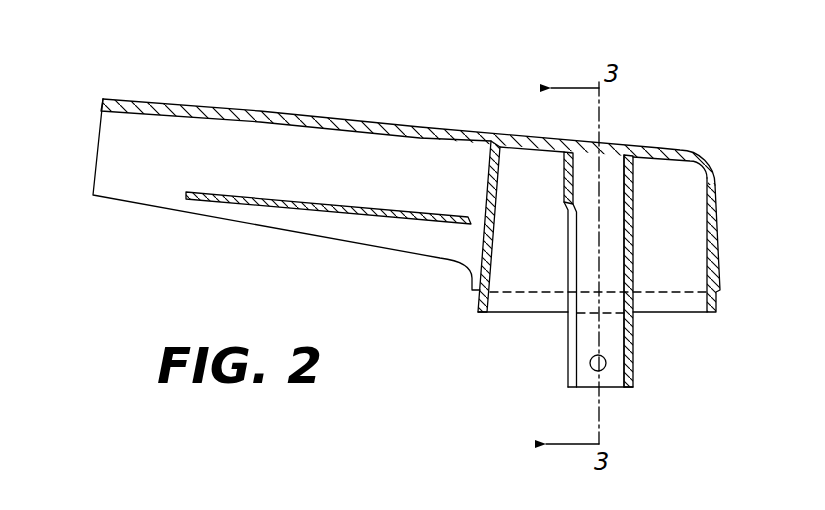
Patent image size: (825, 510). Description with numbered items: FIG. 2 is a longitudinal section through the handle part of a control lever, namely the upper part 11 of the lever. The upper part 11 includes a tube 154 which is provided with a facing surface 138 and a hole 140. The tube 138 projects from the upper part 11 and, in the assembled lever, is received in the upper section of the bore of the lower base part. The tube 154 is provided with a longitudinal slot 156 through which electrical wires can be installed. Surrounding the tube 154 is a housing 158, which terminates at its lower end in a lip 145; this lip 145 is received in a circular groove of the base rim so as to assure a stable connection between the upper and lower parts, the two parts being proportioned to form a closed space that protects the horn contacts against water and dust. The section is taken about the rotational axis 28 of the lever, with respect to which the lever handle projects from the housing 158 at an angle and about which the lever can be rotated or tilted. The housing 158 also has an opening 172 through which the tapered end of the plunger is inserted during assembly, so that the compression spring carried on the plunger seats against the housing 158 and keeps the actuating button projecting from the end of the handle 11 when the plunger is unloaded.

The upper part of the control lever 11 is at (337, 115).
The opening 172 is at (488, 178).
The housing 158 is at (713, 183).
The lip 145 is at (713, 311).
The tube 138 is at (618, 281).
The longitudinal slot 156 is at (567, 332).
The tube 154 is at (629, 348).
The rotational axis 28 is at (600, 203).
The hole 140 is at (590, 361).